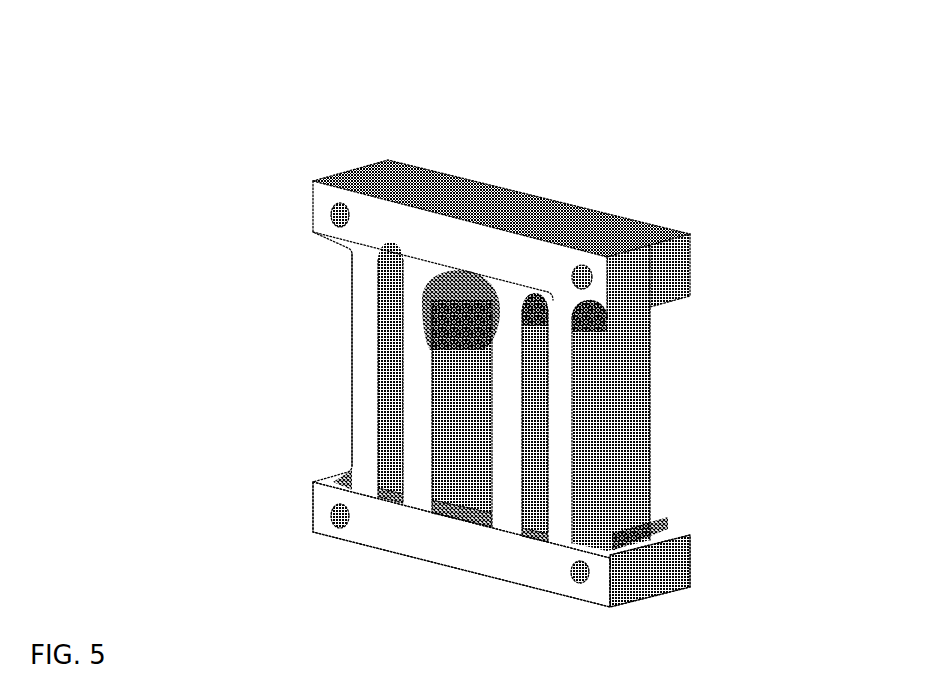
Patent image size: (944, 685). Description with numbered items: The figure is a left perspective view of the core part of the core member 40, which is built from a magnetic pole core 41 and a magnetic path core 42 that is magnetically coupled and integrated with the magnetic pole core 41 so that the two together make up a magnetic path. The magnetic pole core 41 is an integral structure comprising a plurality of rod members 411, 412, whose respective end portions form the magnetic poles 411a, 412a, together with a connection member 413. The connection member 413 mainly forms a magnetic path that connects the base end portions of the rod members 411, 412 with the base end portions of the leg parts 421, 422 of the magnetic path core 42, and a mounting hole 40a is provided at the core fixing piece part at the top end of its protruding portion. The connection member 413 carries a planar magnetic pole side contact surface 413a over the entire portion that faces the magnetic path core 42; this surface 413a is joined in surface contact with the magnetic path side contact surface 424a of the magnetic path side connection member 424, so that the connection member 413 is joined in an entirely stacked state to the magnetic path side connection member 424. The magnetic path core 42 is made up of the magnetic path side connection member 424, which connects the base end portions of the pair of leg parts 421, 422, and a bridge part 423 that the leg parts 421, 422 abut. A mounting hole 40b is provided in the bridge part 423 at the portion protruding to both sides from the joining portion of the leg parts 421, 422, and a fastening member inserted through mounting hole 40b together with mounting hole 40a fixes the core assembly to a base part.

The core member 40 is at (524, 28).
The mounting hole 40a is at (340, 517).
The mounting hole 40b is at (340, 215).
The magnetic pole core 41 is at (188, 346).
The rod member 411 is at (423, 397).
The magnetic pole 411a is at (428, 337).
The rod member 412 is at (505, 447).
The magnetic pole 412a is at (493, 322).
The connection member 413 is at (445, 540).
The magnetic pole side contact surface 413a is at (652, 583).
The magnetic path core 42 is at (780, 98).
The leg part 421 is at (367, 276).
The leg part 422 is at (631, 400).
The bridge part 423 is at (567, 228).
The magnetic path side connection member 424 is at (681, 555).
The magnetic path side contact surface 424a is at (650, 553).